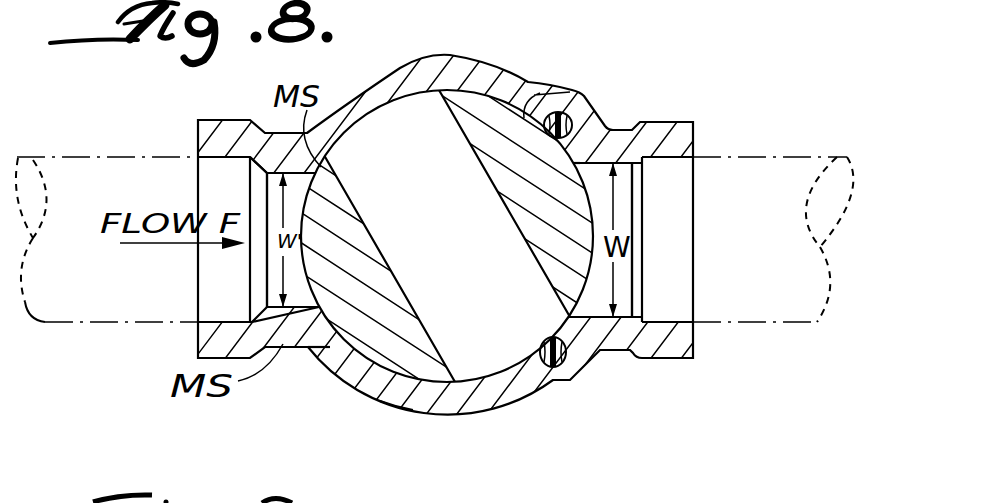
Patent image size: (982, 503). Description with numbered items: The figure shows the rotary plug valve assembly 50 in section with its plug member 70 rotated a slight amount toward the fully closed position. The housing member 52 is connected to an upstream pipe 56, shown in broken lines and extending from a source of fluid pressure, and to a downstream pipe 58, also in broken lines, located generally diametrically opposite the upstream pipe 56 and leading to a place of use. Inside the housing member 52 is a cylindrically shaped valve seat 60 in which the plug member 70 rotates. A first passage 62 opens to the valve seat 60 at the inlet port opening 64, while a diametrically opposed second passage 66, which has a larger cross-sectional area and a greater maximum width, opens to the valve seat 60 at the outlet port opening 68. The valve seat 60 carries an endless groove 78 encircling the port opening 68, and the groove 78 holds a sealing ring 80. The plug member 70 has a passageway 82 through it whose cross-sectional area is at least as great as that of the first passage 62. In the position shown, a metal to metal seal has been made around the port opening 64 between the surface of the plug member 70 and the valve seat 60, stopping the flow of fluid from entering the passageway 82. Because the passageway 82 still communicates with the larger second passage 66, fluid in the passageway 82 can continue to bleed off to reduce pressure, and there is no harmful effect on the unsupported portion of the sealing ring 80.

The rotary plug valve assembly 50 is at (594, 100).
The housing member 52 is at (443, 57).
The upstream pipe 56 is at (117, 325).
The downstream pipe 58 is at (773, 157).
The valve seat 60 is at (393, 388).
The first passage 62 is at (267, 305).
The port opening 64 is at (307, 273).
The second passage 66 is at (631, 166).
The port opening 68 is at (578, 212).
The plug member 70 is at (330, 372).
The endless groove 78 is at (540, 93).
The sealing ring 80 is at (543, 342).
The passageway 82 is at (497, 193).